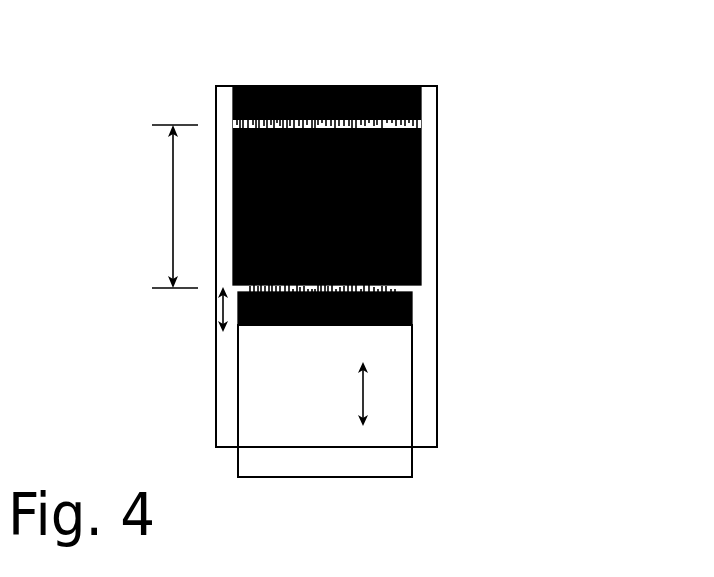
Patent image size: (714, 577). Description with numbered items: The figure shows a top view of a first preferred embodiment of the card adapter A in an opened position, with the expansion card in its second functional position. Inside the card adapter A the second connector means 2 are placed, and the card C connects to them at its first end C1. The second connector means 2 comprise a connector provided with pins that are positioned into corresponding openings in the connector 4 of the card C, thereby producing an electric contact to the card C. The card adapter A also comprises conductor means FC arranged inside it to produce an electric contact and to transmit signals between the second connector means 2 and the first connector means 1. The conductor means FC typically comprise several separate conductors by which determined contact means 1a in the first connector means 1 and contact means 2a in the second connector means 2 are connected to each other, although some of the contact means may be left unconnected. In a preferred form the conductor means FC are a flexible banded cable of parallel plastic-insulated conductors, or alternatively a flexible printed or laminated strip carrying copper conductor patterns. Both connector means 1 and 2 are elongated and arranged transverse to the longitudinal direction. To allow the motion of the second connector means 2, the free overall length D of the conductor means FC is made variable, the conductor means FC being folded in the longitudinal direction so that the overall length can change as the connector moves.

The first connector means 1 is at (421, 100).
The contact means 1a is at (424, 125).
The second connector means 2 is at (412, 319).
The contact means 2a is at (423, 288).
The connector 4 is at (371, 334).
The conductor means FC is at (422, 203).
The card C is at (402, 397).
The first end C1 is at (218, 345).
The free overall length D is at (170, 198).
The card adapter A is at (397, 43).